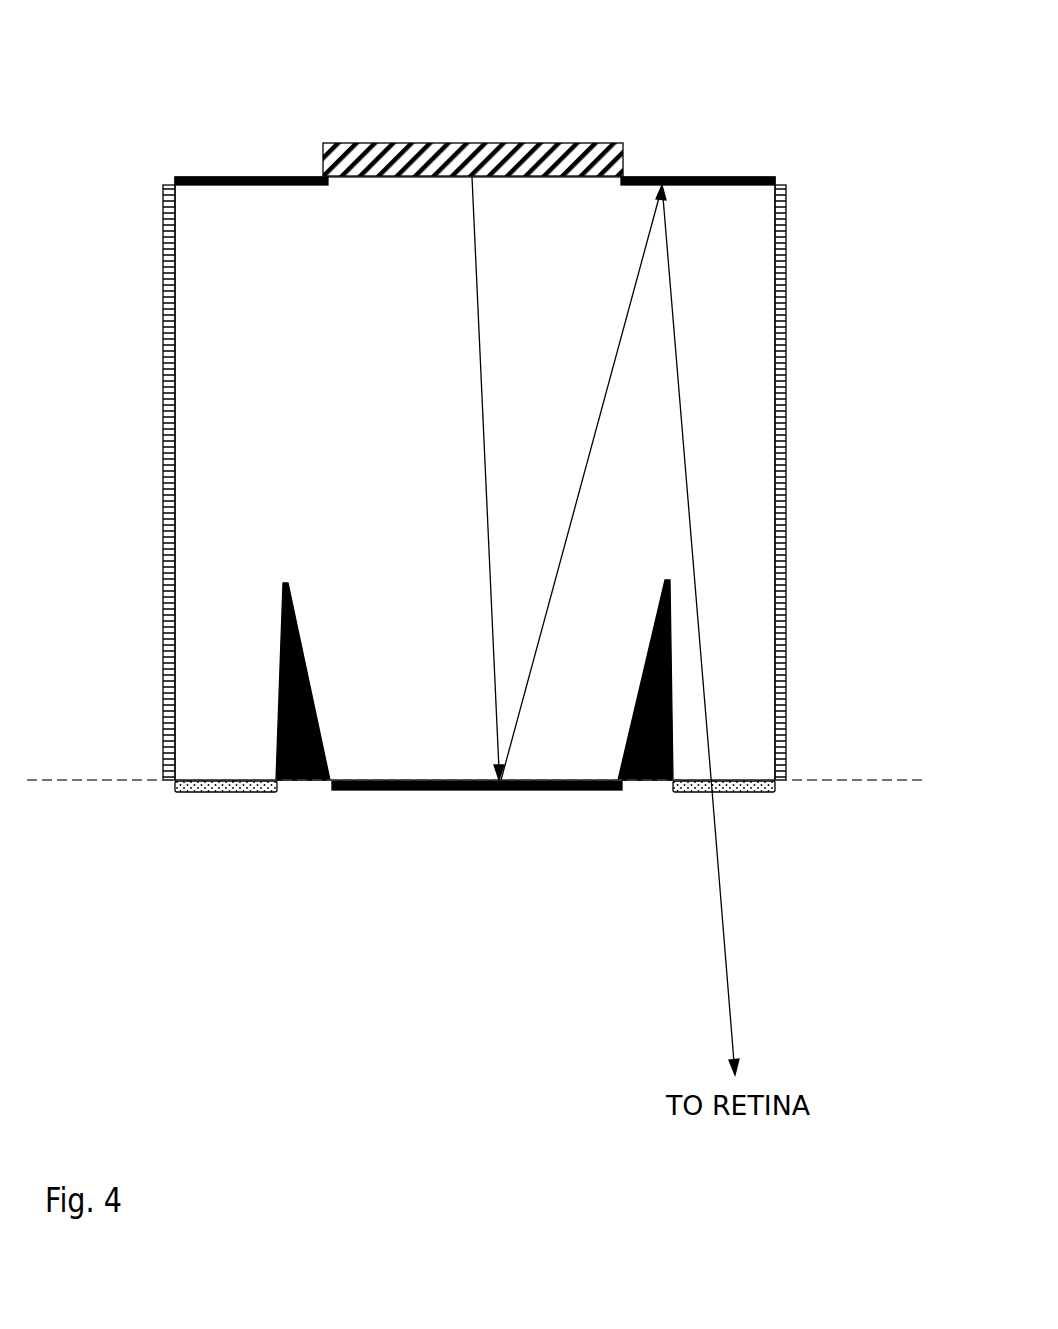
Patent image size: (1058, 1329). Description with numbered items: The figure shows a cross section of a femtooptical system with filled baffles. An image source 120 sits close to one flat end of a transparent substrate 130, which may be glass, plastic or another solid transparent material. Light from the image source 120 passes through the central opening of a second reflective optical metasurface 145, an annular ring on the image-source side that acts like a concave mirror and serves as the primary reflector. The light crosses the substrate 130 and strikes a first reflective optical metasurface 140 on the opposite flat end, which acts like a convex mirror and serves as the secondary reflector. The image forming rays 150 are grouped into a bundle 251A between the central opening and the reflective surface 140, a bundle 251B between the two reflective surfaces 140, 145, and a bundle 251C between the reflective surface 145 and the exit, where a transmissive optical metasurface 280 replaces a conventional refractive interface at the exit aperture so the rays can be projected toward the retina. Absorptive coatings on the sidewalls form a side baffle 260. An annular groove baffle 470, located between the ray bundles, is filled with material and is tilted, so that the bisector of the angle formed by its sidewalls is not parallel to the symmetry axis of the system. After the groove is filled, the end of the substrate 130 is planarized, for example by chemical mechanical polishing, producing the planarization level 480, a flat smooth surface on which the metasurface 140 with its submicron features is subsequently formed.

The image source 120 is at (445, 143).
The transparent substrate 130 is at (385, 432).
The reflective optical metasurface 140 is at (553, 792).
The reflective optical metasurface 145 is at (207, 177).
The image forming rays 150 is at (666, 932).
The bundle of rays 251A is at (464, 478).
The bundle of rays 251B is at (583, 482).
The bundle of rays 251C is at (706, 487).
The side baffle 260 is at (163, 340).
The transmissive optical metasurface 280 is at (738, 792).
The annular groove baffle 470 is at (300, 786).
The planarization level 480 is at (88, 783).